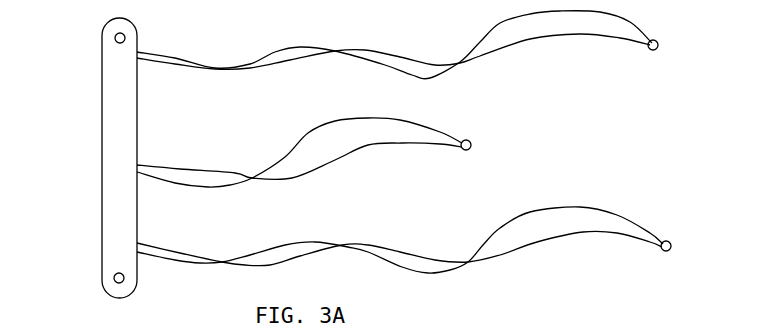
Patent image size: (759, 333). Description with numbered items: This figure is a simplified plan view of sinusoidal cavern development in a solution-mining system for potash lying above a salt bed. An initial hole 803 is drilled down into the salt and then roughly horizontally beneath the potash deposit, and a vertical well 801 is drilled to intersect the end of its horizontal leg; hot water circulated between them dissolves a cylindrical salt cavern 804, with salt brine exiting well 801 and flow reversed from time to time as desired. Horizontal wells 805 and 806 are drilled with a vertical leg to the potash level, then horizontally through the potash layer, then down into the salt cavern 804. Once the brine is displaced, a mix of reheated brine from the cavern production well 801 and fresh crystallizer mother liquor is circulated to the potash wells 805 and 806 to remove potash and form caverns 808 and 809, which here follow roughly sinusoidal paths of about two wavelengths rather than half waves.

The vertical well 801 is at (116, 126).
The initial hole 803 is at (100, 289).
The cylindrical salt cavern 804 is at (100, 226).
The horizontal well 805 is at (659, 55).
The horizontal well 806 is at (439, 152).
The cavern 808 is at (438, 71).
The cavern 809 is at (362, 146).